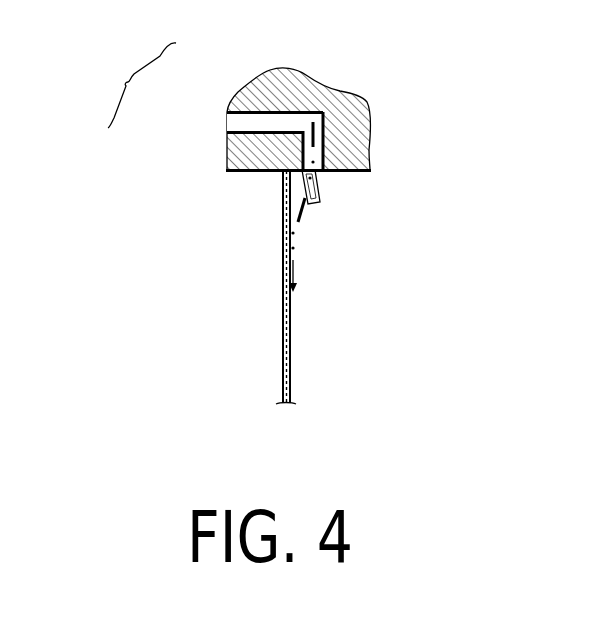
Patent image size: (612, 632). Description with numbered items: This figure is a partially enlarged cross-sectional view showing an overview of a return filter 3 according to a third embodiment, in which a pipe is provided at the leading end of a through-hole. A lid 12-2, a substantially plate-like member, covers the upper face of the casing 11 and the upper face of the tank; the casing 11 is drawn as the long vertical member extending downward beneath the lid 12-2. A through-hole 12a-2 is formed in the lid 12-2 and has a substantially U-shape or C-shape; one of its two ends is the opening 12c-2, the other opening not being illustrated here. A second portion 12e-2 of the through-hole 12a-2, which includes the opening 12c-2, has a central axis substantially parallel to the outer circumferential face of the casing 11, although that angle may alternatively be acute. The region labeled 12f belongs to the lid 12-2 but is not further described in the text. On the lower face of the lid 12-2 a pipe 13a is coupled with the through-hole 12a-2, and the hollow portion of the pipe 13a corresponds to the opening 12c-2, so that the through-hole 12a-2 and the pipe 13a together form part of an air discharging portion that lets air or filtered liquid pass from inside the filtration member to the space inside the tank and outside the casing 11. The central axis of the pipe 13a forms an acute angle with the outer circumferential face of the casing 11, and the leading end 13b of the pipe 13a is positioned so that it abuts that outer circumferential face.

The return filter 3 is at (271, 102).
The casing 11 is at (283, 250).
The lid 12-2 is at (310, 82).
The through-hole 12a-2 is at (128, 83).
The upper wall of housing 12f is at (258, 114).
The second portion 12e-2 is at (302, 148).
The opening 12c-2 is at (324, 160).
The pipe 13a is at (320, 186).
The leading end 13b is at (318, 208).